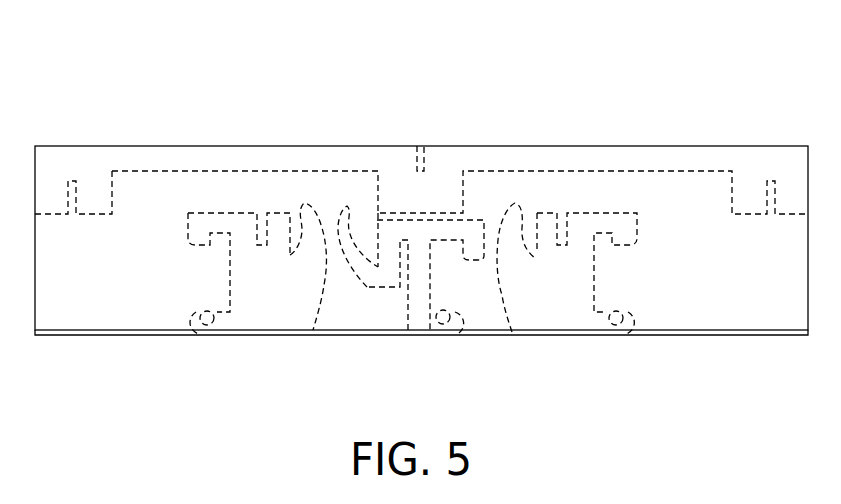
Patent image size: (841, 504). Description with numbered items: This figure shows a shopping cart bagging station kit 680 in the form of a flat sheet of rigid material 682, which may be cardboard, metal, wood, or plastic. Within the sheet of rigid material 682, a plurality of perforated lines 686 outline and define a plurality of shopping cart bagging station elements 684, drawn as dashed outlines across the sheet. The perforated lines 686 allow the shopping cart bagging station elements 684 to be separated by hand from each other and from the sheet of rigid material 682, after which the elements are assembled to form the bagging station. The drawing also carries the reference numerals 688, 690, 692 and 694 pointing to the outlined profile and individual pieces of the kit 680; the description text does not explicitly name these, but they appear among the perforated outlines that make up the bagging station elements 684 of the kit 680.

The shopping cart bagging station kit 680 is at (420, 138).
The sheet of rigid material 682 is at (703, 313).
The shopping cart bagging station elements 684 is at (75, 132).
The perforated lines 686 is at (249, 345).
The cavity profile 688 is at (243, 171).
The left insert 690 is at (195, 243).
The curved blade insert 692 is at (360, 278).
The right blade insert 694 is at (502, 295).